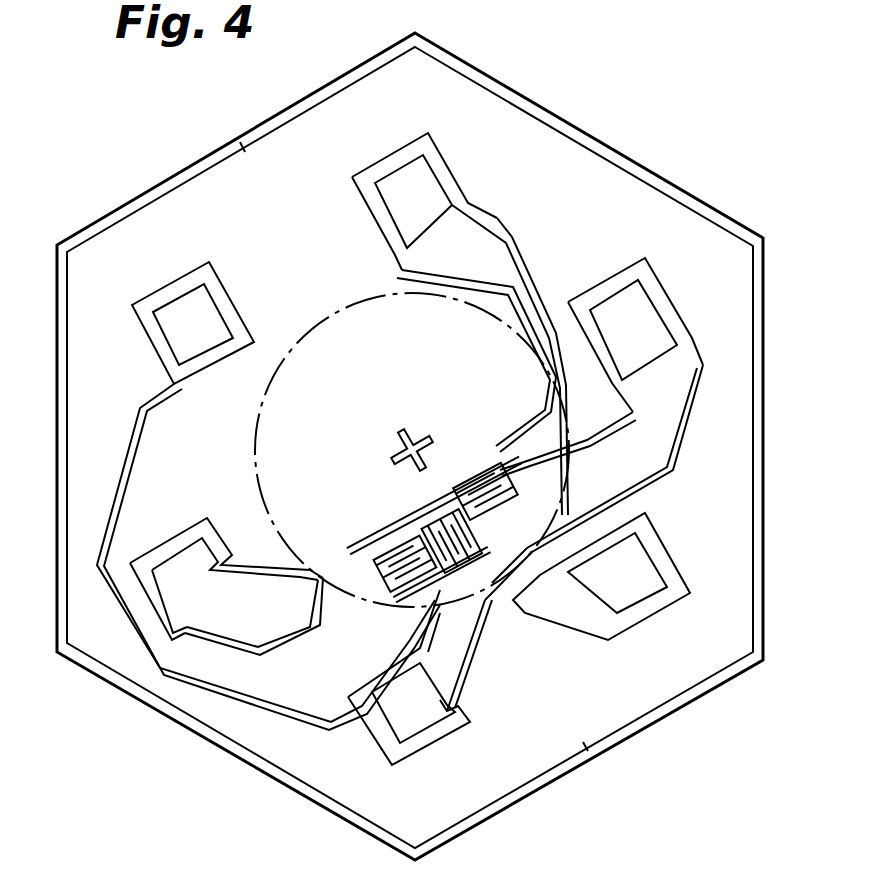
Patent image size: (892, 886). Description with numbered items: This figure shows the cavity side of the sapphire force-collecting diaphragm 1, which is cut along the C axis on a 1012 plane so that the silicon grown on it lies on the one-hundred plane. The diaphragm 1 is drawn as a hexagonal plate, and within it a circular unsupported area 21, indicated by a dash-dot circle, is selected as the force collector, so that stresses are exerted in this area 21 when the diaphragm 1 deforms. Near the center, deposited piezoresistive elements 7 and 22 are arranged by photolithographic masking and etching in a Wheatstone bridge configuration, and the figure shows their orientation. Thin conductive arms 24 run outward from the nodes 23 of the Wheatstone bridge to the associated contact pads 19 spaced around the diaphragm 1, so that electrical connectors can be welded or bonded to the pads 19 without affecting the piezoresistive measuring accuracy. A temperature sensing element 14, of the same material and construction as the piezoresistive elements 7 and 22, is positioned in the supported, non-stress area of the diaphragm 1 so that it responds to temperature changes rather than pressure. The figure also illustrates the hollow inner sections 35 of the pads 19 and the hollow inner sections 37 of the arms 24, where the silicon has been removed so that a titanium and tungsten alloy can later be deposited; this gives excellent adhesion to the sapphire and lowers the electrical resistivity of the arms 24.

The diaphragm 1 is at (460, 82).
The 1012 plane 1012 is at (414, 417).
The piezoresistive element 7 is at (525, 605).
The temperature sensing element 14 is at (137, 660).
The contact pads 19 is at (225, 305).
The circular unsupported area 21 is at (270, 471).
The piezoresistive element 22 is at (540, 490).
The nodes 23 is at (490, 500).
The arms 24 is at (690, 422).
The inner section of the pads 35 is at (428, 185).
The inner sections of the arms 37 is at (498, 250).